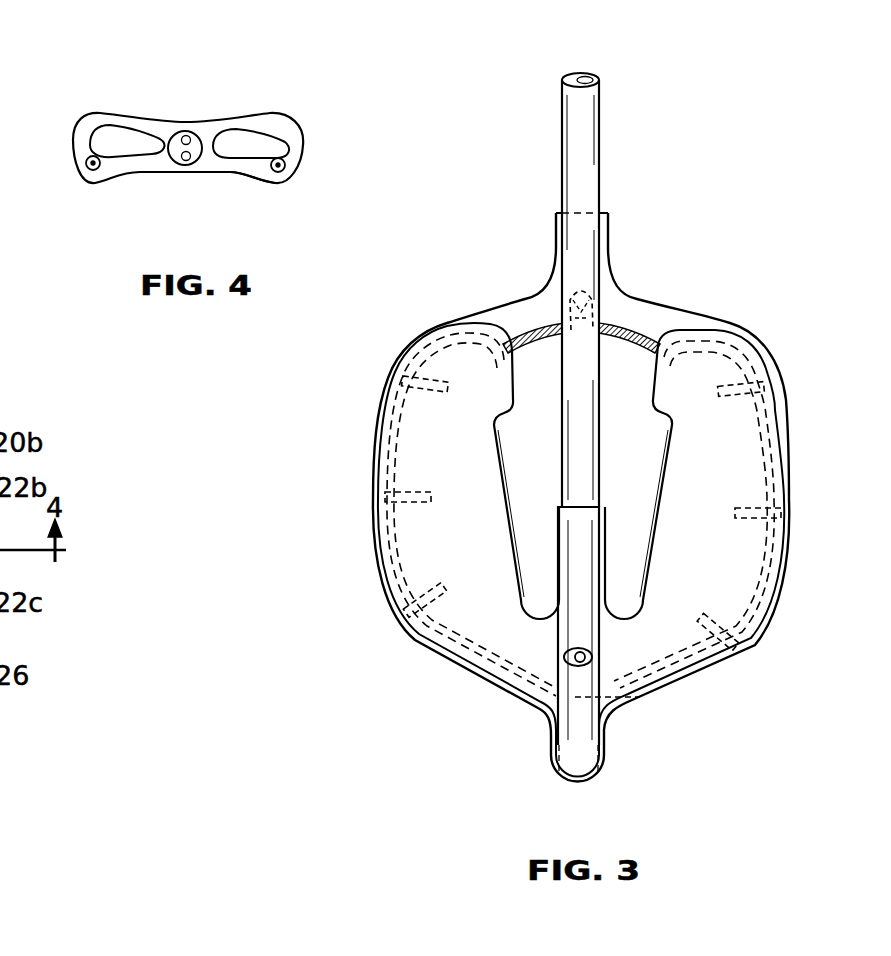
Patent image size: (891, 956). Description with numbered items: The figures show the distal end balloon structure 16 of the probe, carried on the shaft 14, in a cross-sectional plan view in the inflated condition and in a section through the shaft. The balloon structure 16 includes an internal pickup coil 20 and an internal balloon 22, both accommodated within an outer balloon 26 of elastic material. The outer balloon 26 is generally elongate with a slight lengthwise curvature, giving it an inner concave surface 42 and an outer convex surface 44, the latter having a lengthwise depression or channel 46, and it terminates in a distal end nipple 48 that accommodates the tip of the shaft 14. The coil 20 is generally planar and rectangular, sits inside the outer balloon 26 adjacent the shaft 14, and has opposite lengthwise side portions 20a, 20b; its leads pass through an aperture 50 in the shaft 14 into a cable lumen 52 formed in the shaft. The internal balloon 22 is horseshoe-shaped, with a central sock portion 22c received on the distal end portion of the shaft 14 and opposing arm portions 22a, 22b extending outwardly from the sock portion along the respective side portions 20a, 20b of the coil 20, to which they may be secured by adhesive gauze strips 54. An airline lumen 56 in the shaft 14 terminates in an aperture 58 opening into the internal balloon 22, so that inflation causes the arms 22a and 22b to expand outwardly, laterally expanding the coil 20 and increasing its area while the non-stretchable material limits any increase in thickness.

In FIG. 4, the shaft 14 is at (178, 160).
In FIG. 3, the shaft 14 is at (578, 130).
In FIG. 4, the balloon structure 16 is at (130, 103).
In FIG. 3, the balloon structure 16 is at (362, 593).
In FIG. 3, the pickup coil 20 is at (368, 536).
In FIG. 4, the side portion of the coil 20a is at (106, 178).
In FIG. 3, the side portion of the coil 20a is at (376, 412).
In FIG. 4, the side portion of the coil 20b is at (300, 168).
In FIG. 3, the side portion of the coil 20b is at (782, 420).
In FIG. 3, the internal balloon 22 is at (722, 584).
In FIG. 3, the arm portion of the internal balloon 22a is at (432, 465).
In FIG. 3, the arm portion of the internal balloon 22b is at (748, 468).
In FIG. 3, the sock portion 22c is at (577, 592).
In FIG. 4, the outer balloon 26 is at (78, 133).
In FIG. 3, the outer balloon 26 is at (540, 302).
In FIG. 4, the inner concave surface 42 is at (225, 118).
In FIG. 4, the outer convex surface 44 is at (292, 178).
In FIG. 4, the channel 46 is at (222, 178).
In FIG. 3, the distal end nipple 48 is at (551, 746).
In FIG. 3, the aperture 50 is at (600, 360).
In FIG. 4, the cable lumen 52 is at (188, 134).
In FIG. 3, the adhesive gauze strips 54 is at (410, 345).
In FIG. 4, the airline lumen 56 is at (185, 161).
In FIG. 3, the aperture 58 is at (585, 666).